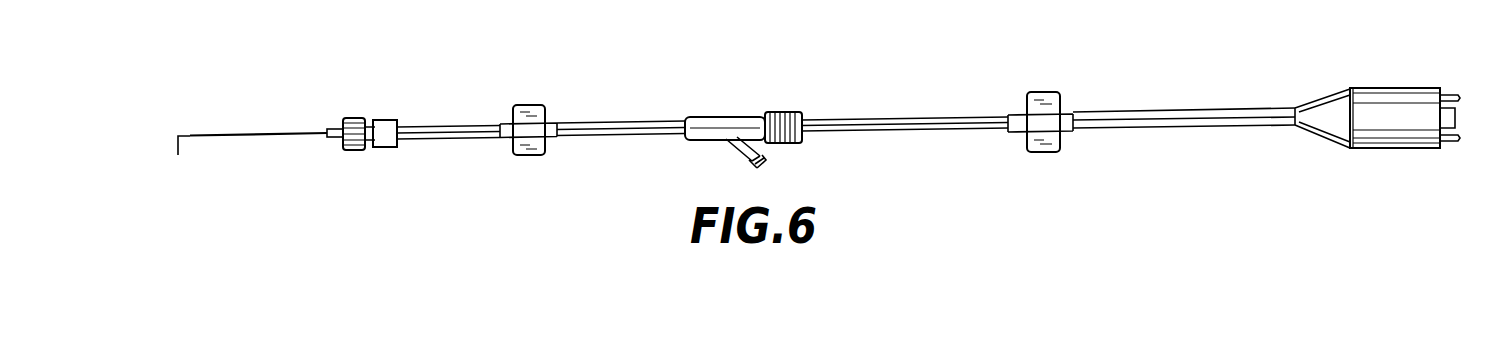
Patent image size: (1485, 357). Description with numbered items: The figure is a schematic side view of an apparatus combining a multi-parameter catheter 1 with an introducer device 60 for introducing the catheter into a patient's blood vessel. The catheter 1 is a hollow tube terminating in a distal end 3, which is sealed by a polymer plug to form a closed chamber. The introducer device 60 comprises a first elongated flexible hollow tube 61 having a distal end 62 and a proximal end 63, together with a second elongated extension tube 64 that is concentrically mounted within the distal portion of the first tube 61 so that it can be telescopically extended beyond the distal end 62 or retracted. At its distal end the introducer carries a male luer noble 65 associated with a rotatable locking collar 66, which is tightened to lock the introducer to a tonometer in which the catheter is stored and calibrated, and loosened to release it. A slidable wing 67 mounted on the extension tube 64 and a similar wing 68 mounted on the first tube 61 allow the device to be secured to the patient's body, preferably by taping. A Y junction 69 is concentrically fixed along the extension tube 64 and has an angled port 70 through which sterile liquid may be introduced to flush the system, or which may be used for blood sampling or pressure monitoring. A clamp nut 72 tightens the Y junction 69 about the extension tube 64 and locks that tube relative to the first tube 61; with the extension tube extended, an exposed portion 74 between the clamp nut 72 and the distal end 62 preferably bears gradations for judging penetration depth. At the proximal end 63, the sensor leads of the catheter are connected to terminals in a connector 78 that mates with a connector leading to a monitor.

The multi-parameter catheter 1 is at (225, 137).
The distal end 3 is at (183, 164).
The introducer device 60 is at (632, 120).
The first elongated flexible hollow tube 61 is at (1112, 90).
The distal end 62 is at (1010, 117).
The proximal end 63 is at (1296, 106).
The second elongated extension tube 64 is at (438, 122).
The male luer noble 65 is at (337, 123).
The rotatable locking collar 66 is at (352, 150).
The slidable wing 67 is at (525, 105).
The wing 68 is at (1043, 92).
The Y junction 69 is at (712, 117).
The angled port 70 is at (730, 160).
The clamp nut 72 is at (788, 112).
The exposed portion 74 is at (940, 97).
The connector 78 is at (1372, 150).